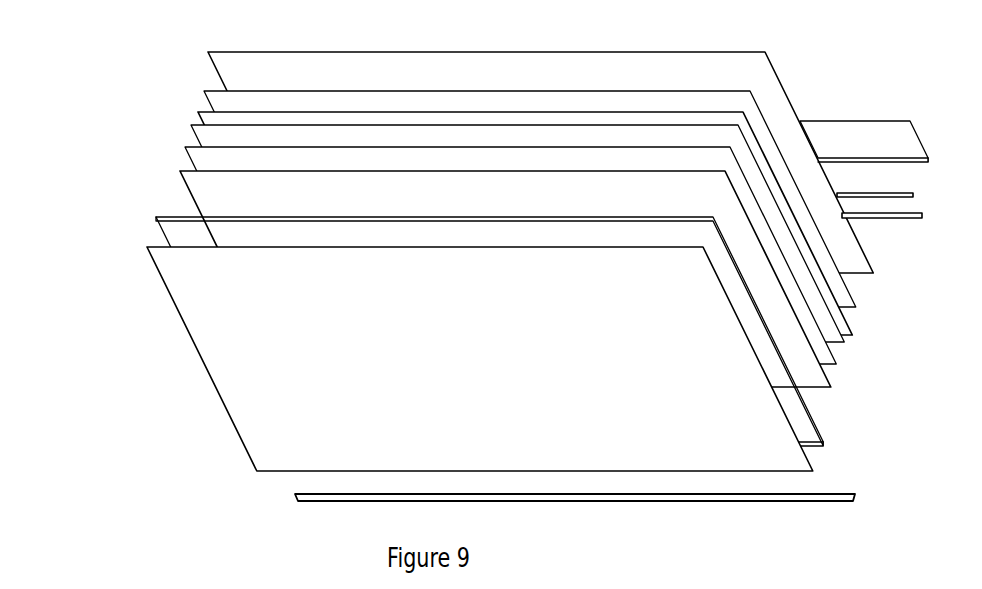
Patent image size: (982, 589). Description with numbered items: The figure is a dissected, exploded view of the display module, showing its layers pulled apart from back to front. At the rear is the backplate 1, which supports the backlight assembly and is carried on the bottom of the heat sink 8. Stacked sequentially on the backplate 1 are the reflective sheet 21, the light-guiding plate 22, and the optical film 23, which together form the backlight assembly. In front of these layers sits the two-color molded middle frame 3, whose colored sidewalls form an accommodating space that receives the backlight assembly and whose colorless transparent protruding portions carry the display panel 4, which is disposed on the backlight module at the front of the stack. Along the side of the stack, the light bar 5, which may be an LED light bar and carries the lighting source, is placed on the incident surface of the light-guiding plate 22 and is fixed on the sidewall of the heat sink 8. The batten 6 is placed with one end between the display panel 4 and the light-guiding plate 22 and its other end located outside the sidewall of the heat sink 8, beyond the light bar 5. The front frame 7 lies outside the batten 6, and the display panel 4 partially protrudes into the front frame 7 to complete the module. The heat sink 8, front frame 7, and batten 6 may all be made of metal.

The backplate 1 is at (261, 64).
The reflective sheet 21 is at (228, 98).
The light-guiding plate 22 is at (210, 116).
The optical film 23 is at (200, 172).
The middle frame 3 is at (186, 216).
The display panel 4 is at (247, 297).
The light bar 5 is at (909, 196).
The batten 6 is at (905, 222).
The front frame 7 is at (310, 503).
The heat sink 8 is at (855, 137).